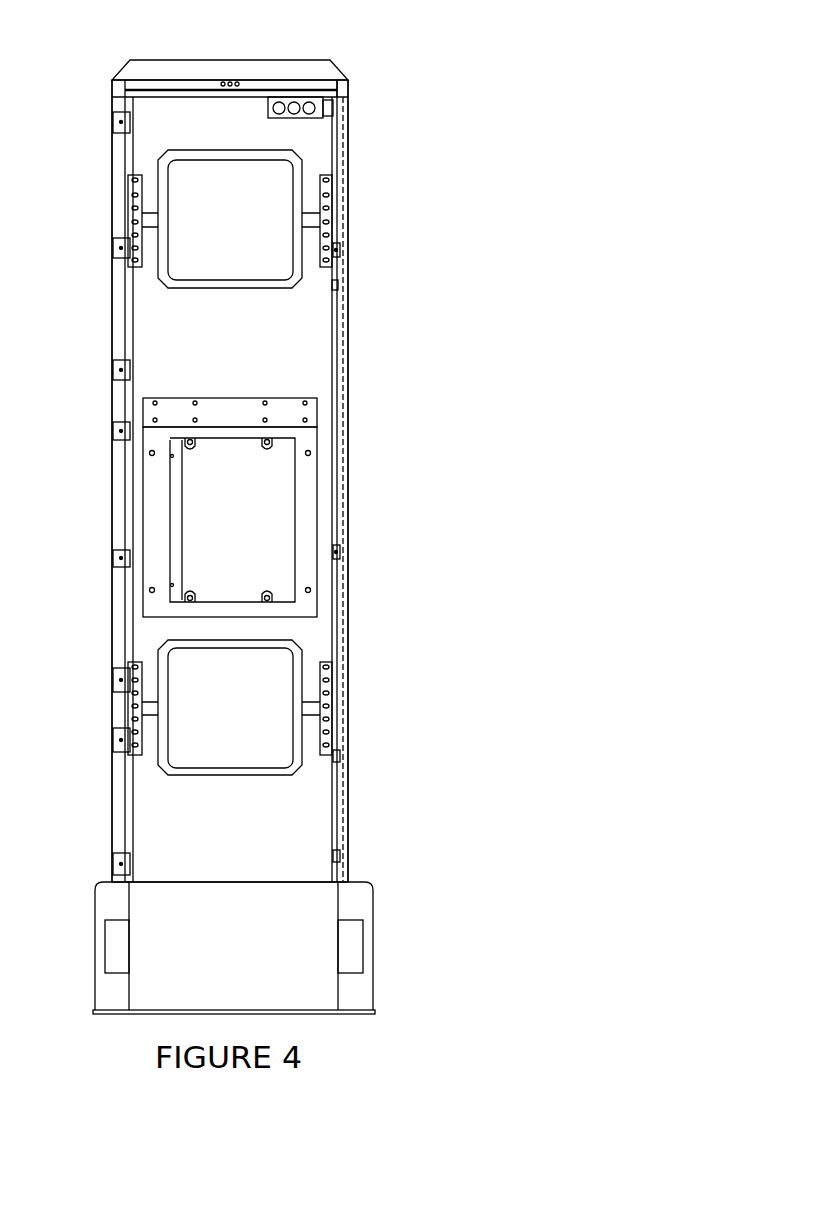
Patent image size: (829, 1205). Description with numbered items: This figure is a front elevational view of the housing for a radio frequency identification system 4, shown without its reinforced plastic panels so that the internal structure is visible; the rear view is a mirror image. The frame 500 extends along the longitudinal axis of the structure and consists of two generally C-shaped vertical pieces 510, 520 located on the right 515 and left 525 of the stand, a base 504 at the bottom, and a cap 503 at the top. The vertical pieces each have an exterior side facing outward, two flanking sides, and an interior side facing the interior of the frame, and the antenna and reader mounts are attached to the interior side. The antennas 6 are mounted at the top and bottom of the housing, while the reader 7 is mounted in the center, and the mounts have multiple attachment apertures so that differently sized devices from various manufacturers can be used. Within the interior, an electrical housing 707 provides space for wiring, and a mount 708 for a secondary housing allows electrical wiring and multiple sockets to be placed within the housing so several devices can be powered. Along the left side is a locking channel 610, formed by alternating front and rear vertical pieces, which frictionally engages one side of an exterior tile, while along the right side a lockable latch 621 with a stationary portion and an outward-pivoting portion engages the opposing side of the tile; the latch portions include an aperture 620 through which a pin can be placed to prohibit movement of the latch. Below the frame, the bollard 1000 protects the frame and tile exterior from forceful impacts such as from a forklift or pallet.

The radio frequency identification (RFID) system 4 is at (392, 427).
The cap 503 is at (302, 73).
The electrical housing 707 is at (333, 110).
The aperture 620 is at (339, 251).
The lockable latch 621 is at (330, 287).
The radio frequency antenna 6 is at (280, 263).
The mount for a secondary housing 708 is at (318, 408).
The RFID reader 7 is at (275, 540).
The vertical piece 510 is at (345, 597).
The right side 515 is at (348, 632).
The frame portion 500 is at (337, 757).
The vertical piece 520 is at (113, 630).
The left side 525 is at (113, 805).
The locking channel 610 is at (110, 256).
The base 504 is at (135, 1013).
The bollard 1000 is at (318, 995).